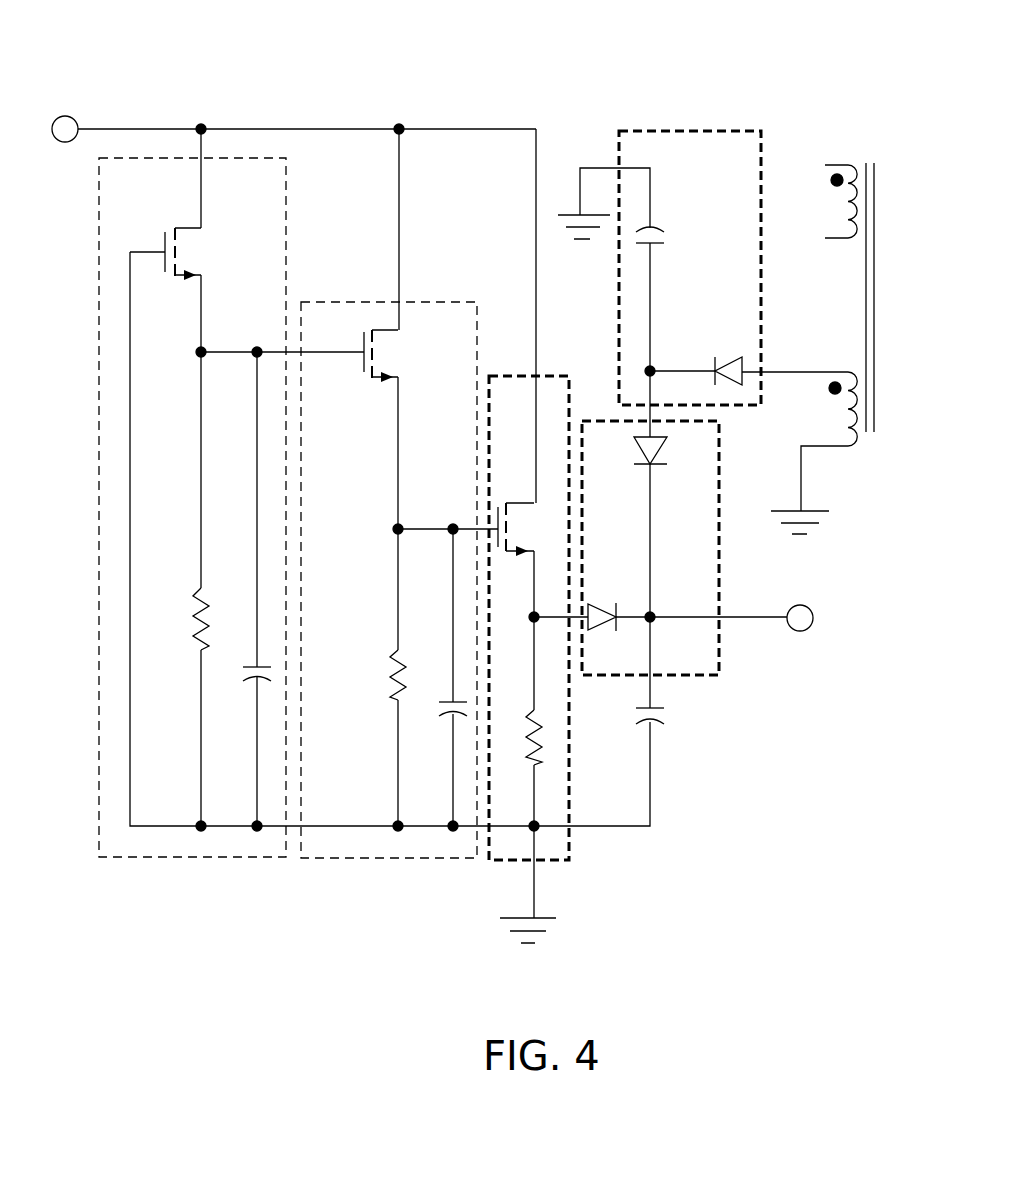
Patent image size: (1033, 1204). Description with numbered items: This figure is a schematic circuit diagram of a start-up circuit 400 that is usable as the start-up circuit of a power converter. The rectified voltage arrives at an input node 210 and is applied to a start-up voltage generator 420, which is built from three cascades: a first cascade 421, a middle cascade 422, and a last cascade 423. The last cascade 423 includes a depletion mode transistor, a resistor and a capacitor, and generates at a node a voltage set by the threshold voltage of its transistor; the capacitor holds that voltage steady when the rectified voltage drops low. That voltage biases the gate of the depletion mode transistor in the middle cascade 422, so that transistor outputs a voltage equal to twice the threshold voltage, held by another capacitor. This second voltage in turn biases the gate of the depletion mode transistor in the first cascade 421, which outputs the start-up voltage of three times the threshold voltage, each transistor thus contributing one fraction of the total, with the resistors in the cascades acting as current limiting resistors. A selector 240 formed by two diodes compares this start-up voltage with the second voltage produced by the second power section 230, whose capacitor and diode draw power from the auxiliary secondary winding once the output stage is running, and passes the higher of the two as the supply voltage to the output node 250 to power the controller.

The start-up circuit 400 is at (832, 70).
The input node 210 is at (62, 142).
The second power section 230 is at (692, 131).
The selector 240 is at (719, 655).
The output node 250 is at (797, 631).
The start-up voltage generator 420 is at (438, 928).
The first cascade 421 is at (497, 866).
The middle cascade 422 is at (357, 858).
The last cascade 423 is at (197, 858).